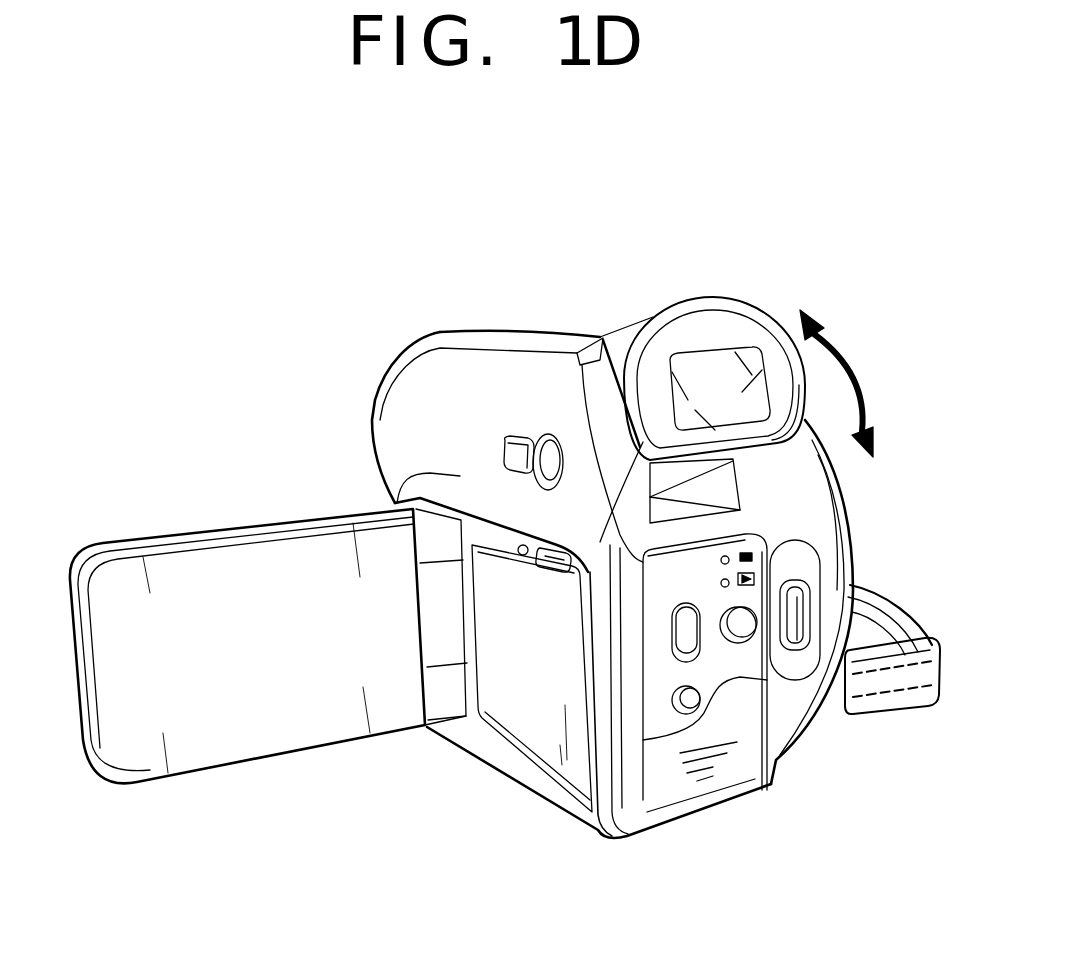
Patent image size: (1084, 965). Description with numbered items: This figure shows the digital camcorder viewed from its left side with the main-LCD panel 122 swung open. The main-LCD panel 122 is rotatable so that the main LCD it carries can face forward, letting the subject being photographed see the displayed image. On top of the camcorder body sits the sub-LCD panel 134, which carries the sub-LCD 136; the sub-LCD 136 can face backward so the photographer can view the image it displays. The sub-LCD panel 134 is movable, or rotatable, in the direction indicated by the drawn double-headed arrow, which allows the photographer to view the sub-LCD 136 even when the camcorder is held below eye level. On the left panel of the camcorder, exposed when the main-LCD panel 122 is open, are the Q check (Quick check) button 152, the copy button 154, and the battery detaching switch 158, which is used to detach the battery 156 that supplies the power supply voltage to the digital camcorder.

The main-LCD panel 122 is at (210, 532).
The sub-LCD panel 134 is at (712, 313).
The sub-LCD 136 is at (762, 375).
The Q check (Quick check) button 152 is at (512, 455).
The copy button 154 is at (546, 458).
The battery 156 is at (540, 727).
The battery detaching switch 158 is at (560, 562).